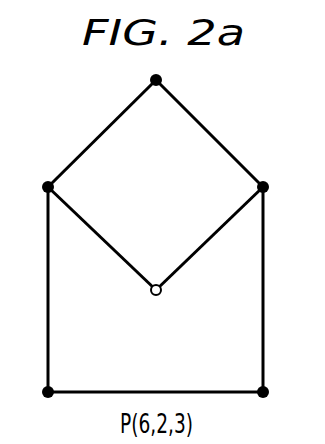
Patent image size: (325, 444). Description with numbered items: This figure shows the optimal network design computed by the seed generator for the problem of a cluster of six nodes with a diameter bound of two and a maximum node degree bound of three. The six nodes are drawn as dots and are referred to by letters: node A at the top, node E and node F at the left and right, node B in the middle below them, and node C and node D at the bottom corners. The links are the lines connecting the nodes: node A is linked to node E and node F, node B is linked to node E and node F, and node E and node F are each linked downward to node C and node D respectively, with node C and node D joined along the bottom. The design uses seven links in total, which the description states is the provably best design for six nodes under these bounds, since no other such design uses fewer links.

The node A is at (145, 81).
The node B is at (145, 289).
The node C is at (37, 392).
The node D is at (273, 392).
The node E is at (37, 186).
The node F is at (273, 186).